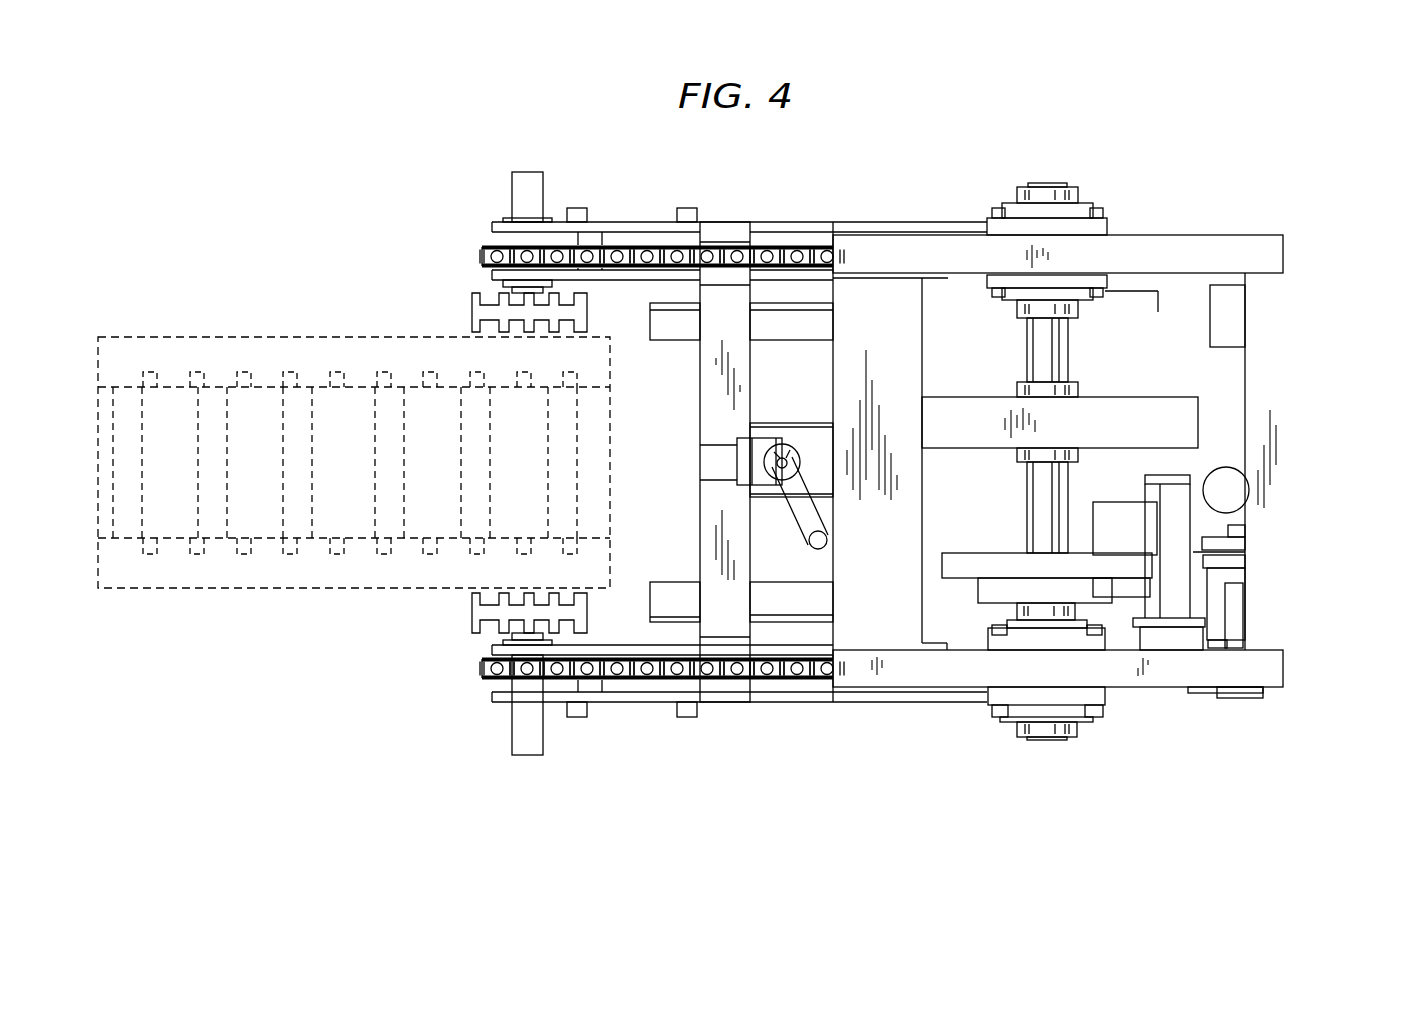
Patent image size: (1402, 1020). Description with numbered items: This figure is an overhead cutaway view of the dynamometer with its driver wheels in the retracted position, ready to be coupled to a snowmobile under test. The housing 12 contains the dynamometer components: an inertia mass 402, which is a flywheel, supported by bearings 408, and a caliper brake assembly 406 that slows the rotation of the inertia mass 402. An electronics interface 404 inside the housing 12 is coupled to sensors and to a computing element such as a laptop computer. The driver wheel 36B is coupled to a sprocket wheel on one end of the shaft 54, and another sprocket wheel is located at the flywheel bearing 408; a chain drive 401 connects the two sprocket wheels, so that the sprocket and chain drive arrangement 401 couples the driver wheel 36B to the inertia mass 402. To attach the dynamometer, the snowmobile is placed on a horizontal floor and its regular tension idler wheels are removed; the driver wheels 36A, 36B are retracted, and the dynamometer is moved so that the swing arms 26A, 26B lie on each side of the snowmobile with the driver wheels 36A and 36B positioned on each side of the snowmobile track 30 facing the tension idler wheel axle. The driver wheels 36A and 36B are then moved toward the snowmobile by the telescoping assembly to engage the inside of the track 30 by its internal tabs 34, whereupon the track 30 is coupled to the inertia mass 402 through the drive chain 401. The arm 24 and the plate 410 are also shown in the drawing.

The housing 12 is at (1268, 602).
The crank arm 24 is at (803, 530).
The swing arm 26A is at (645, 222).
The swing arm 26B is at (647, 705).
The snowmobile track 30 is at (172, 590).
The internal tabs 34 is at (342, 368).
The driver wheel 36A is at (470, 310).
The driver wheel 36B is at (472, 612).
The shaft 54 is at (543, 755).
The chain drive 401 is at (483, 673).
The inertia mass 402 is at (1095, 410).
The electronics interface 404 is at (1237, 315).
The caliper brake assembly 406 is at (1147, 512).
The bearings 408 is at (1075, 738).
The support plate 410 is at (985, 603).